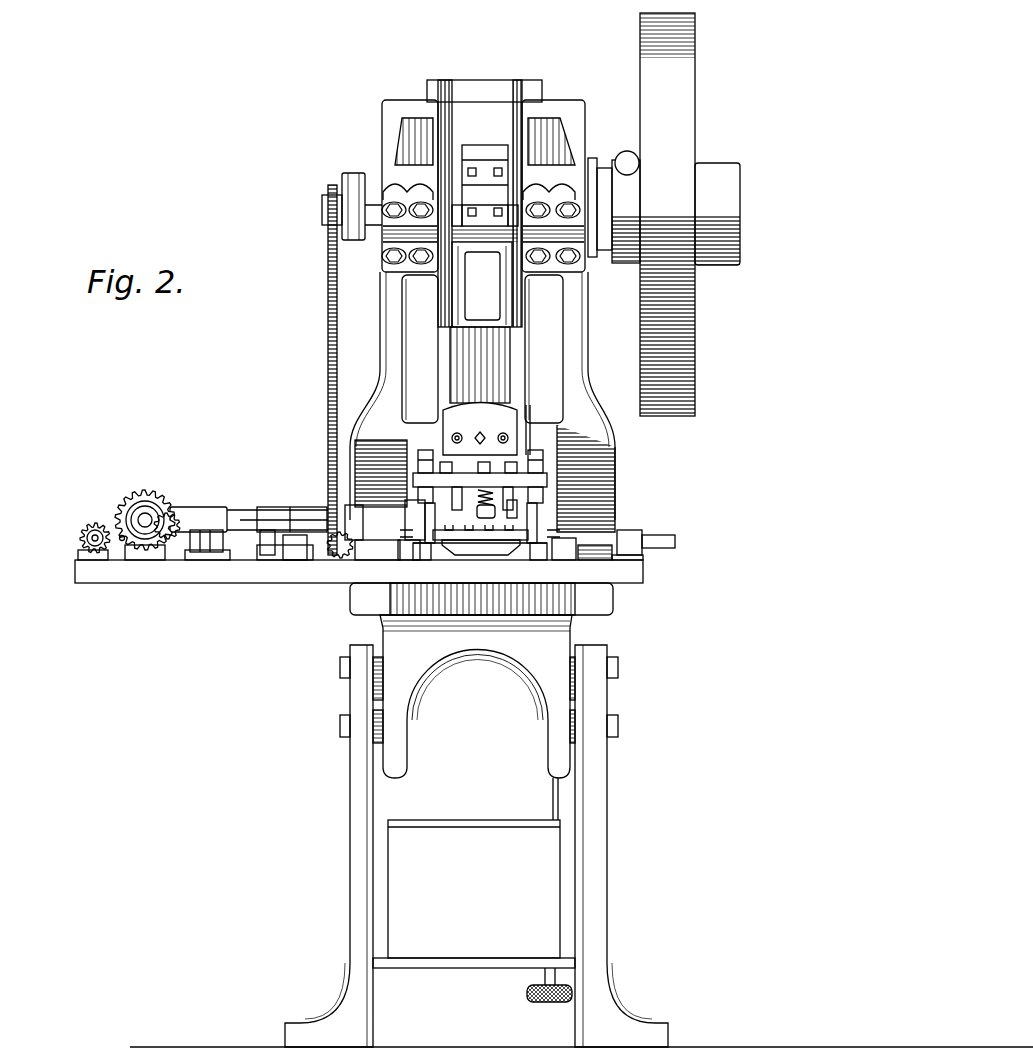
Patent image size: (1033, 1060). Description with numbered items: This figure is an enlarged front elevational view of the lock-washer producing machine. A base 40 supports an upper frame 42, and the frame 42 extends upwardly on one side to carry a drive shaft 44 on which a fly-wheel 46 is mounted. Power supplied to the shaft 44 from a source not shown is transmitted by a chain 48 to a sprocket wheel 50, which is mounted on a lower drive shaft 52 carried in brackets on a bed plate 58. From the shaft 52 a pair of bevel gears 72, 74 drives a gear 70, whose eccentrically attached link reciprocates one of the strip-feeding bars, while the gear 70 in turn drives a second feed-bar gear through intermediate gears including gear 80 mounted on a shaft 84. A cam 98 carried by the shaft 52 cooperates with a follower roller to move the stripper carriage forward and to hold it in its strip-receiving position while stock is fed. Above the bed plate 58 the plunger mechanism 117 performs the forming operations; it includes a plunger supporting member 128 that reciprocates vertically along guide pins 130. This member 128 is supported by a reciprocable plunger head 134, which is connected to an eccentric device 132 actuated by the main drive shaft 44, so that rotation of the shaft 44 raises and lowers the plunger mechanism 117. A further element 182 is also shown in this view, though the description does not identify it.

The base 40 is at (598, 852).
The upper frame 42 is at (590, 603).
The drive shaft 44 is at (372, 185).
The fly-wheel 46 is at (690, 355).
The chain 48 is at (327, 356).
The sprocket wheel 50 is at (328, 500).
The drive shaft 52 is at (248, 512).
The bed plate 58 is at (228, 578).
The gear 70 is at (153, 492).
The bevel gear 72 is at (175, 510).
The bevel gear 74 is at (142, 500).
The gear 80 is at (95, 522).
The shaft 84 is at (80, 540).
The cam 98 is at (410, 538).
The plunger mechanism 117 is at (541, 447).
The plunger supporting member 128 is at (600, 487).
The guide pins 130 is at (560, 514).
The eccentric device 132 is at (486, 144).
The plunger head 134 is at (497, 376).
The rod 182 is at (655, 540).